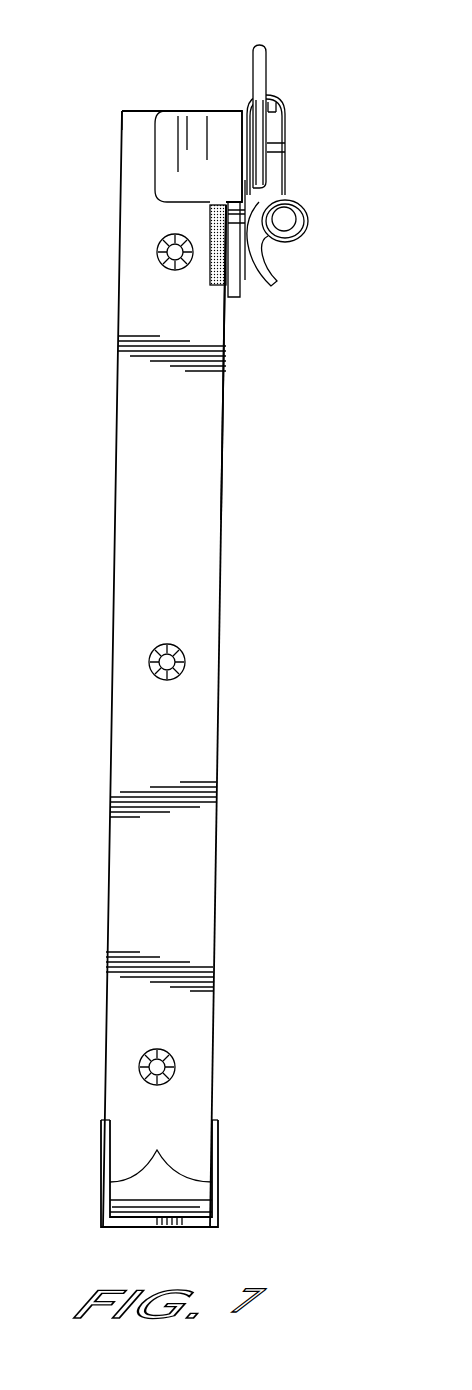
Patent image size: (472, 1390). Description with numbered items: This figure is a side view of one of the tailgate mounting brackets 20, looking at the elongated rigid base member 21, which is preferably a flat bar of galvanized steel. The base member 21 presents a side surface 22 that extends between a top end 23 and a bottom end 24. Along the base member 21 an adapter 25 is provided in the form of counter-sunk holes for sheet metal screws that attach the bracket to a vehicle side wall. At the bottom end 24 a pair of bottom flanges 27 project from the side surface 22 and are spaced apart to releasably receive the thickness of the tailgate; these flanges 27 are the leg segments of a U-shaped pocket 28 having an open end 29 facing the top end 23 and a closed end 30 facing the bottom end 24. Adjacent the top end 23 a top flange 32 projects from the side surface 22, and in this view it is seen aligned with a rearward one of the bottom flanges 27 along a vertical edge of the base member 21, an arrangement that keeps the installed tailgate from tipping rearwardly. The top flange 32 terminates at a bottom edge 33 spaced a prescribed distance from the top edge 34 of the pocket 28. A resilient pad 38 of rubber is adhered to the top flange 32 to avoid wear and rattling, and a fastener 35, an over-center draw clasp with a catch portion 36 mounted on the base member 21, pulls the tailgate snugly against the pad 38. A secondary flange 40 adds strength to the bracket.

The bracket 20 is at (76, 596).
The base member 21 is at (150, 865).
The side surface 22 is at (168, 587).
The top end 23 is at (122, 130).
The bottom end 24 is at (183, 1195).
The adapter 25 is at (183, 268).
The bottom flanges 27 is at (161, 1149).
The U-shaped pocket 28 is at (232, 1164).
The open end 29 is at (130, 1122).
The closed end 30 is at (125, 1220).
The top flange 32 is at (242, 292).
The bottom edge 33 is at (233, 302).
The top edge 34 is at (218, 1122).
The fastener 35 is at (296, 148).
The catch portion 36 is at (258, 72).
The resilient pad 38 is at (207, 277).
The secondary flange 40 is at (205, 153).